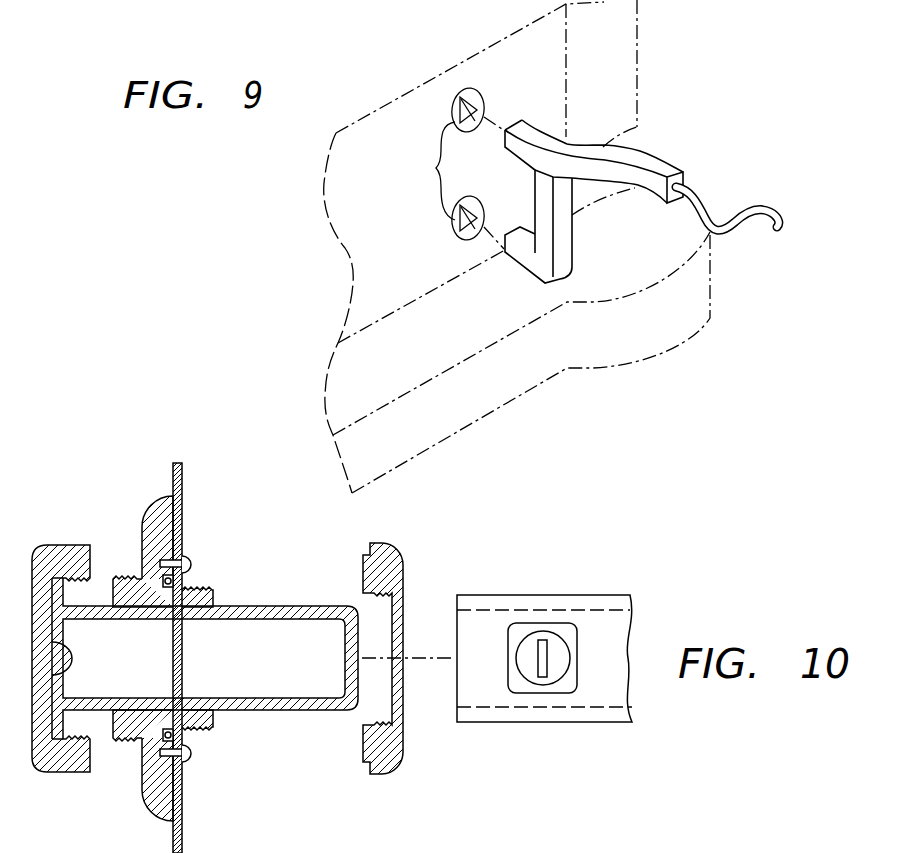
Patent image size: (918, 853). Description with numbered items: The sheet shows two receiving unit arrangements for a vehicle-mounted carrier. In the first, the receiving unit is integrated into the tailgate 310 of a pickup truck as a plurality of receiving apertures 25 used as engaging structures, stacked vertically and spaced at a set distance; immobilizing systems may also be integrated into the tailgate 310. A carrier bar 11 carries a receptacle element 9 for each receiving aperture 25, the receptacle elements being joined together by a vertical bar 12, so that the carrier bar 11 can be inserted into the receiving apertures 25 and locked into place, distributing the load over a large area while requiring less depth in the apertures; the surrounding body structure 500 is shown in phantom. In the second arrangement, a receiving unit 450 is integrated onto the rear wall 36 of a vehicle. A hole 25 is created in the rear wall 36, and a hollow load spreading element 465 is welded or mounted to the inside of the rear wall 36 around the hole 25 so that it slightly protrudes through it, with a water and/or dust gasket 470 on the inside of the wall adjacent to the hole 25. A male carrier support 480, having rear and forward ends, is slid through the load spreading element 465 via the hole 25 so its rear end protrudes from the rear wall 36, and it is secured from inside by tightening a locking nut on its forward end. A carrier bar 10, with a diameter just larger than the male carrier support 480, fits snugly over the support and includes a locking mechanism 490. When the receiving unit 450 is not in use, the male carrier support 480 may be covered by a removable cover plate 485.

In FIG. 9, the receptacle element 9 is at (533, 132).
In FIG. 9, the carrier bar 11 is at (669, 130).
In FIG. 9, the vertical bar 12 is at (563, 243).
In FIG. 9, the receiving aperture 25 is at (436, 171).
In FIG. 10, the receiving aperture 25 is at (195, 658).
In FIG. 9, the tailgate 310 is at (623, 40).
In FIG. 9, the panel 500 is at (517, 247).
In FIG. 10, the panel 500 is at (610, 852).
In FIG. 10, the receiving unit 450 is at (128, 438).
In FIG. 10, the load spreading element 465 is at (152, 510).
In FIG. 10, the water and/or dust gasket 470 is at (156, 583).
In FIG. 10, the rear wall of a vehicle 36 is at (188, 497).
In FIG. 10, the male carrier support 480 is at (257, 627).
In FIG. 10, the removable cover plate 485 is at (396, 545).
In FIG. 10, the carrier bar 10 is at (544, 657).
In FIG. 10, the locking mechanism 490 is at (543, 693).